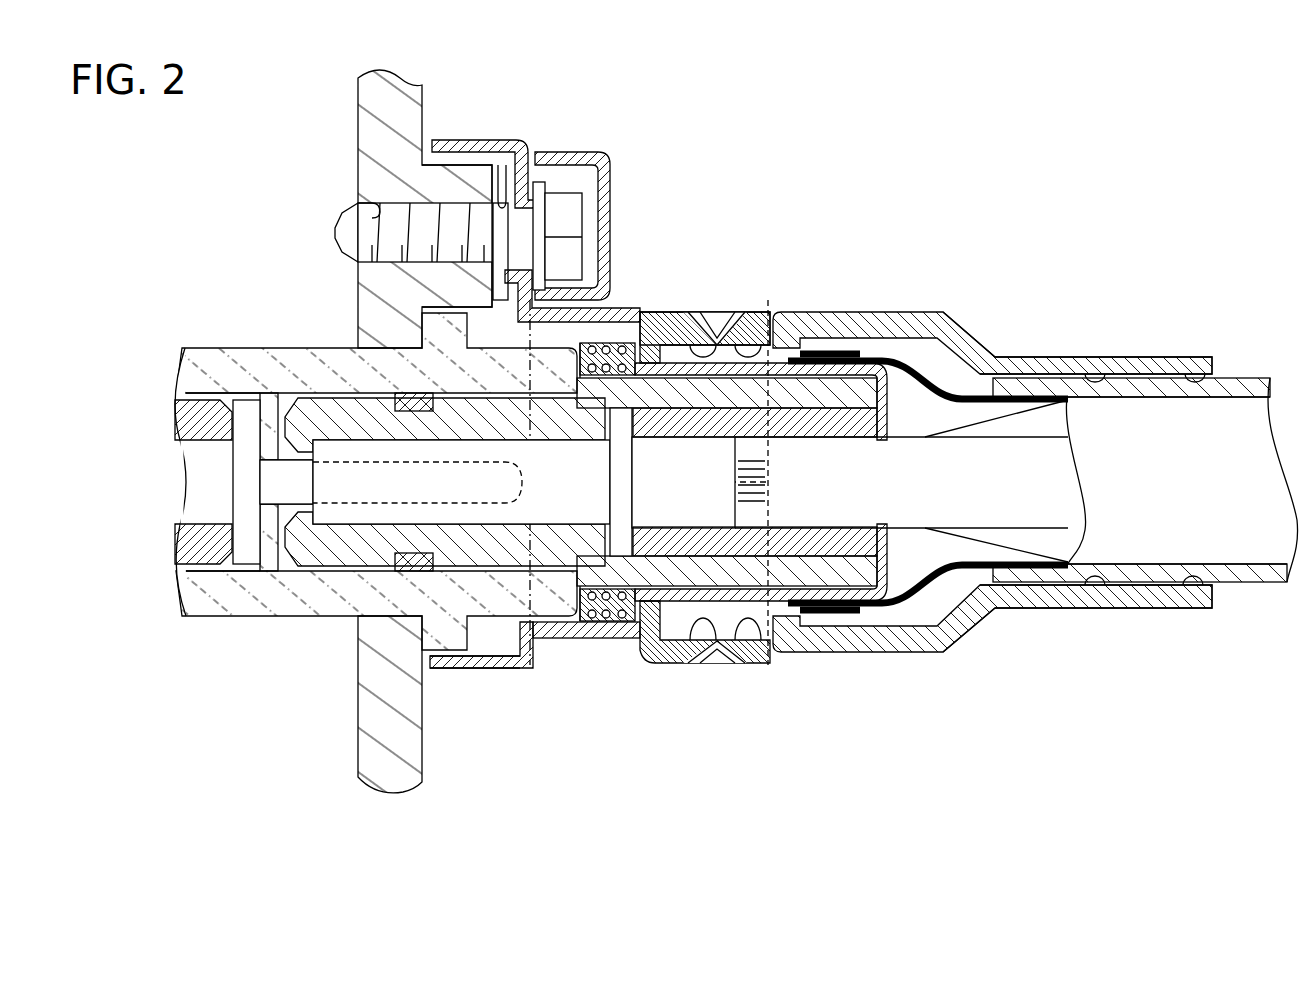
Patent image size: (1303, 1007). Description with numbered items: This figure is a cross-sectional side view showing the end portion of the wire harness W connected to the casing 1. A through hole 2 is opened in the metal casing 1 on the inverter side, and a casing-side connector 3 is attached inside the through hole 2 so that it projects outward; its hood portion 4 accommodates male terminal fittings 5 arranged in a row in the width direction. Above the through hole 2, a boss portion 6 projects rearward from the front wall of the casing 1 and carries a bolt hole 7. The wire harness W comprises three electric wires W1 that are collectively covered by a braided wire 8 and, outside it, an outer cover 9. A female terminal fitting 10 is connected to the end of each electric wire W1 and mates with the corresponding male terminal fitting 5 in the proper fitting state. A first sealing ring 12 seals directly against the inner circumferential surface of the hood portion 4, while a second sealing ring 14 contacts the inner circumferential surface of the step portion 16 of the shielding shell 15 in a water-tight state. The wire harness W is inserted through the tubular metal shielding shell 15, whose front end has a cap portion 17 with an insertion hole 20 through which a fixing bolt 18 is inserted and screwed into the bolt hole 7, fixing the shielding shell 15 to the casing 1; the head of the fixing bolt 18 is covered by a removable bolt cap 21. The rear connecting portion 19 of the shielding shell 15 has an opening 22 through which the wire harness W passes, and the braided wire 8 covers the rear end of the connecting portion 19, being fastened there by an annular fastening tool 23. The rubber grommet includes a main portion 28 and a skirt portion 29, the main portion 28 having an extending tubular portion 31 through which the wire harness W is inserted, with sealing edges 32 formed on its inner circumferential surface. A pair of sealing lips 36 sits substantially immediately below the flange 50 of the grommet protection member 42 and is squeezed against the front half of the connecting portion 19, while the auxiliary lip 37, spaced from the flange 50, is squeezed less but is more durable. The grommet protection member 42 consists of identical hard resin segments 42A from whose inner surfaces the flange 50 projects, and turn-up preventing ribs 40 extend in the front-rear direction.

The casing 1 is at (350, 770).
The through hole 2 is at (360, 612).
The casing-side connector 3 is at (232, 622).
The hood portion 4 is at (292, 616).
The male terminal fitting 5 is at (298, 472).
The boss portion 6 is at (456, 185).
The bolt hole 7 is at (360, 210).
The braided wire 8 is at (962, 398).
The outer cover 9 is at (1168, 388).
The female terminal fitting 10 is at (498, 505).
The first sealing ring 12 is at (405, 570).
The second sealing ring 14 is at (607, 612).
The shielding shell 15 is at (522, 135).
The step portion 16 is at (548, 640).
The cap portion 17 is at (462, 668).
The fixing bolt 18 is at (335, 233).
The connecting portion 19 is at (868, 377).
The insertion hole 20 is at (500, 203).
The bolt cap 21 is at (598, 152).
The opening 22 is at (890, 405).
The annular fastening tool 23 is at (820, 612).
The main portion 28 is at (905, 645).
The skirt portion 29 is at (588, 640).
The extending tubular portion 31 is at (1068, 360).
The sealing edges 32 is at (1193, 588).
The sealing lips 36 is at (745, 622).
The auxiliary lip 37 is at (665, 355).
The turn-up preventing ribs 40 is at (623, 308).
The grommet protection member 42 is at (752, 310).
The segment 42A is at (680, 312).
The flange 50 is at (708, 338).
The wire harness W is at (1248, 378).
The electric wire W1 is at (1042, 505).